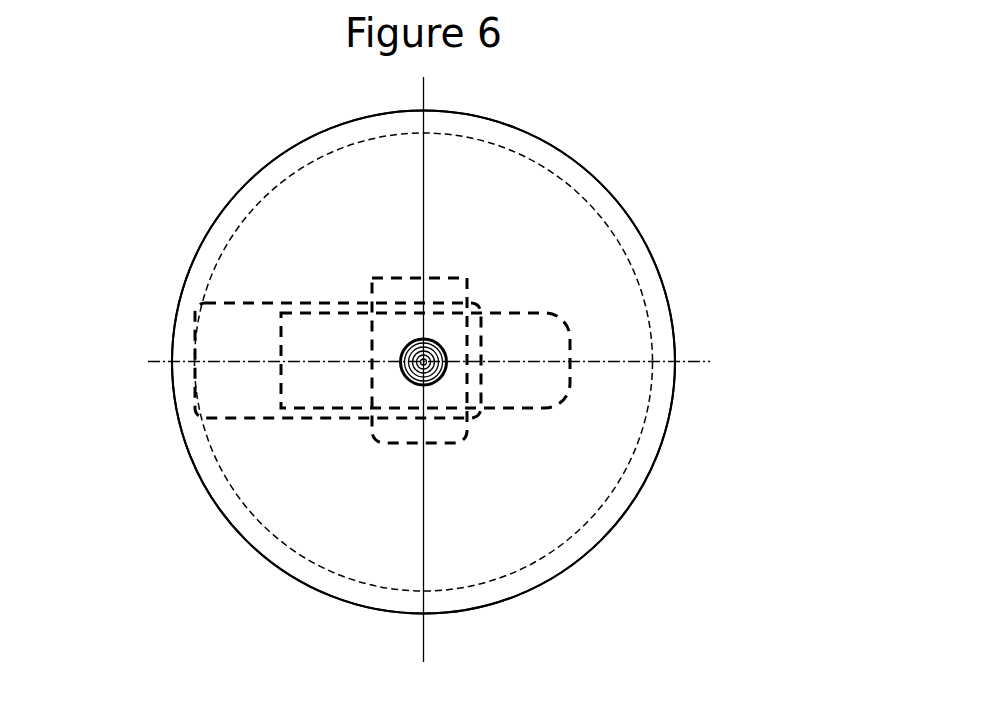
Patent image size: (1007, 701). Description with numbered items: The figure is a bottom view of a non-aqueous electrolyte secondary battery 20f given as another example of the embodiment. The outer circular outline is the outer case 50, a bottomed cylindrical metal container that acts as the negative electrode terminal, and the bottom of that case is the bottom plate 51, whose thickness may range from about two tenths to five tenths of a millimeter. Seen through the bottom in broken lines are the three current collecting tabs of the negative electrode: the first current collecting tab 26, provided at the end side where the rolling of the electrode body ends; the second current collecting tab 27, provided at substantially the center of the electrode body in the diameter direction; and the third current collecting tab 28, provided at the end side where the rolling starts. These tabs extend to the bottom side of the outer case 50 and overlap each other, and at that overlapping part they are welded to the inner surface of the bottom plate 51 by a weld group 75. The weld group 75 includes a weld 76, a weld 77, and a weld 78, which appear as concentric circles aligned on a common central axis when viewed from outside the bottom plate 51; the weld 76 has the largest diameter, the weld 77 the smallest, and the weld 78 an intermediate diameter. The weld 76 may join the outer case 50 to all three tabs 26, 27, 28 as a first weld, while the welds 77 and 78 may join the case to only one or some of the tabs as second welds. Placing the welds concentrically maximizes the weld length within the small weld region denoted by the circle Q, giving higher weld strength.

The secondary battery 20f is at (663, 187).
The outer case 50 is at (672, 318).
The bottom plate 51 is at (578, 265).
The first current collecting tab 26 is at (262, 425).
The second current collecting tab 27 is at (521, 414).
The third current collecting tab 28 is at (441, 275).
The circle Q is at (410, 337).
The weld group 75 is at (371, 451).
The weld 76 is at (405, 372).
The weld 77 is at (433, 384).
The weld 78 is at (418, 385).